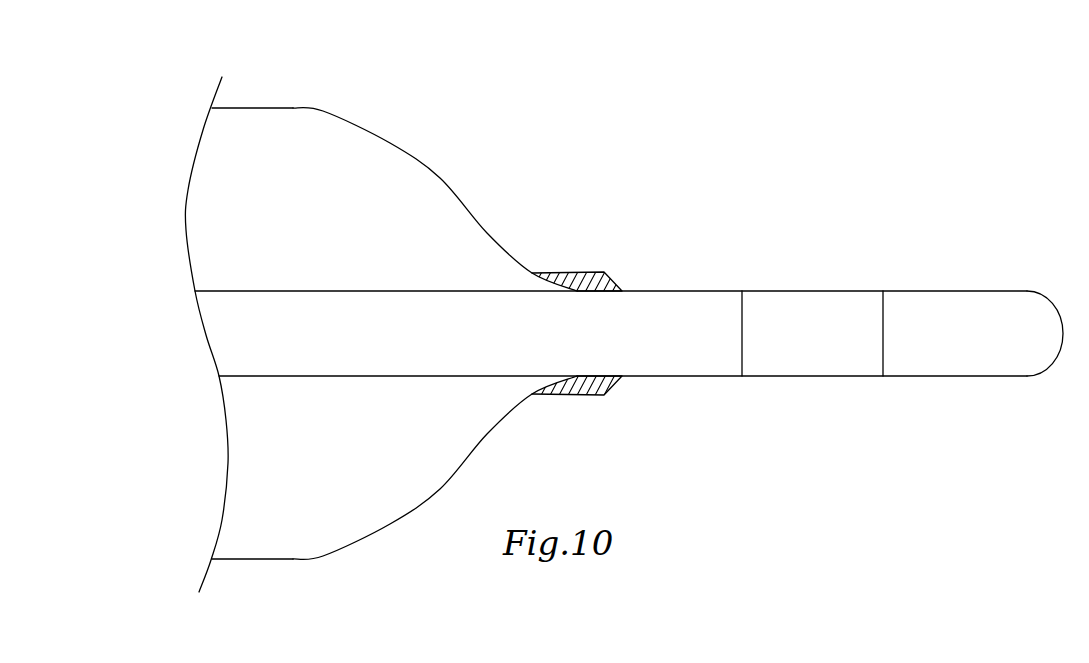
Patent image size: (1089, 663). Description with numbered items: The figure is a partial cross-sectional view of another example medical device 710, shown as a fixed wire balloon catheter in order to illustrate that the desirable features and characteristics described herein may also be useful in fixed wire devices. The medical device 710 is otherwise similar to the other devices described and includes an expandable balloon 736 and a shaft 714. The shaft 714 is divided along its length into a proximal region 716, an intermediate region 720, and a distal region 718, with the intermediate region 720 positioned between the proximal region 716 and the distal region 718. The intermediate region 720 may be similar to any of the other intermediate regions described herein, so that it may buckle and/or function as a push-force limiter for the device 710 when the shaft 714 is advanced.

The medical device 710 is at (497, 117).
The shaft 714 is at (700, 238).
The proximal region 716 is at (483, 340).
The distal region 718 is at (950, 303).
The intermediate region 720 is at (807, 303).
The expandable balloon 736 is at (267, 108).